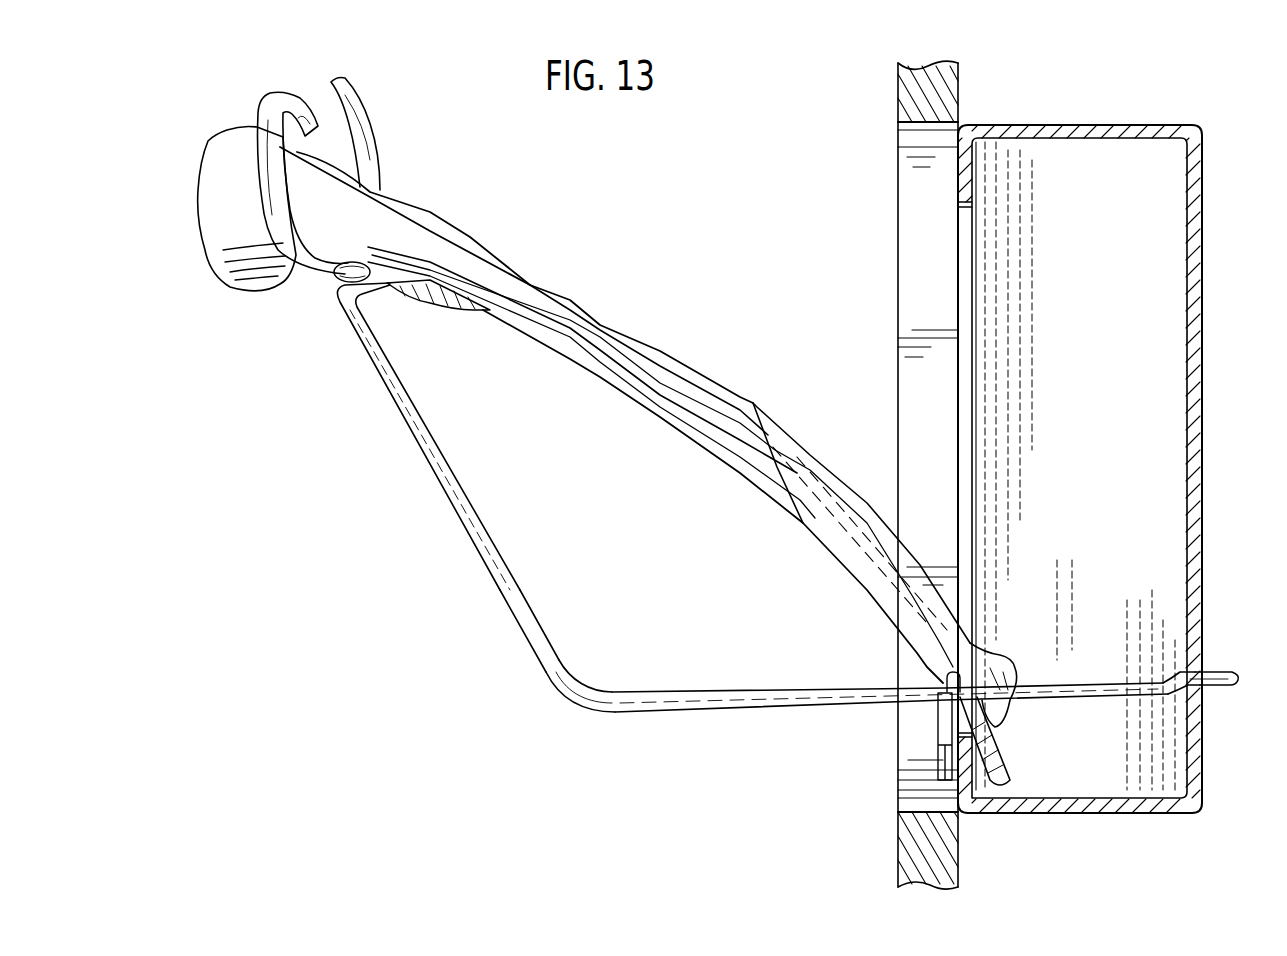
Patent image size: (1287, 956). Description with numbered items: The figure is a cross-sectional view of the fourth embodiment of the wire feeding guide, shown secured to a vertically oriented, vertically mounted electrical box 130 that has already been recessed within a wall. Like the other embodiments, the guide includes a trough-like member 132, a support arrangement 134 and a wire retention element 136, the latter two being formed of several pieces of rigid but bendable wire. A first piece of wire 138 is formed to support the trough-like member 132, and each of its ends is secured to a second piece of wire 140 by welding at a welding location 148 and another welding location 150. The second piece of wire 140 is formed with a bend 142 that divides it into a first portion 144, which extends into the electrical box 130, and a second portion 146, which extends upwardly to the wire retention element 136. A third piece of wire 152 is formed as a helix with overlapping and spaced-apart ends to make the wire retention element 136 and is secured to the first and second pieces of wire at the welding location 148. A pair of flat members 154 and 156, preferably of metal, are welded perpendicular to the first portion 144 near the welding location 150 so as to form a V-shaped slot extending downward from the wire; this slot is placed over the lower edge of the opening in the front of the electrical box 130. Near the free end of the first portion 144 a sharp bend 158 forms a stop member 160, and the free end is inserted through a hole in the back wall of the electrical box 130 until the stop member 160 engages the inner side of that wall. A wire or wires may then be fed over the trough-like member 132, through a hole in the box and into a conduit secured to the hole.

The electrical box 130 is at (1210, 316).
The trough-like member 132 is at (677, 510).
The support arrangement 134 is at (803, 529).
The wire retention element 136 is at (403, 160).
The first piece of wire 138 is at (398, 283).
The second piece of wire 140 is at (537, 620).
The bend 142 is at (603, 688).
The first portion 144 is at (745, 714).
The second portion 146 is at (495, 547).
The welding location 148 is at (330, 282).
The welding location 150 is at (947, 690).
The third piece of wire 152 is at (364, 122).
The flat member 154 is at (938, 745).
The flat member 156 is at (1010, 767).
The sharp bend 158 is at (1170, 667).
The stop member 160 is at (1212, 662).